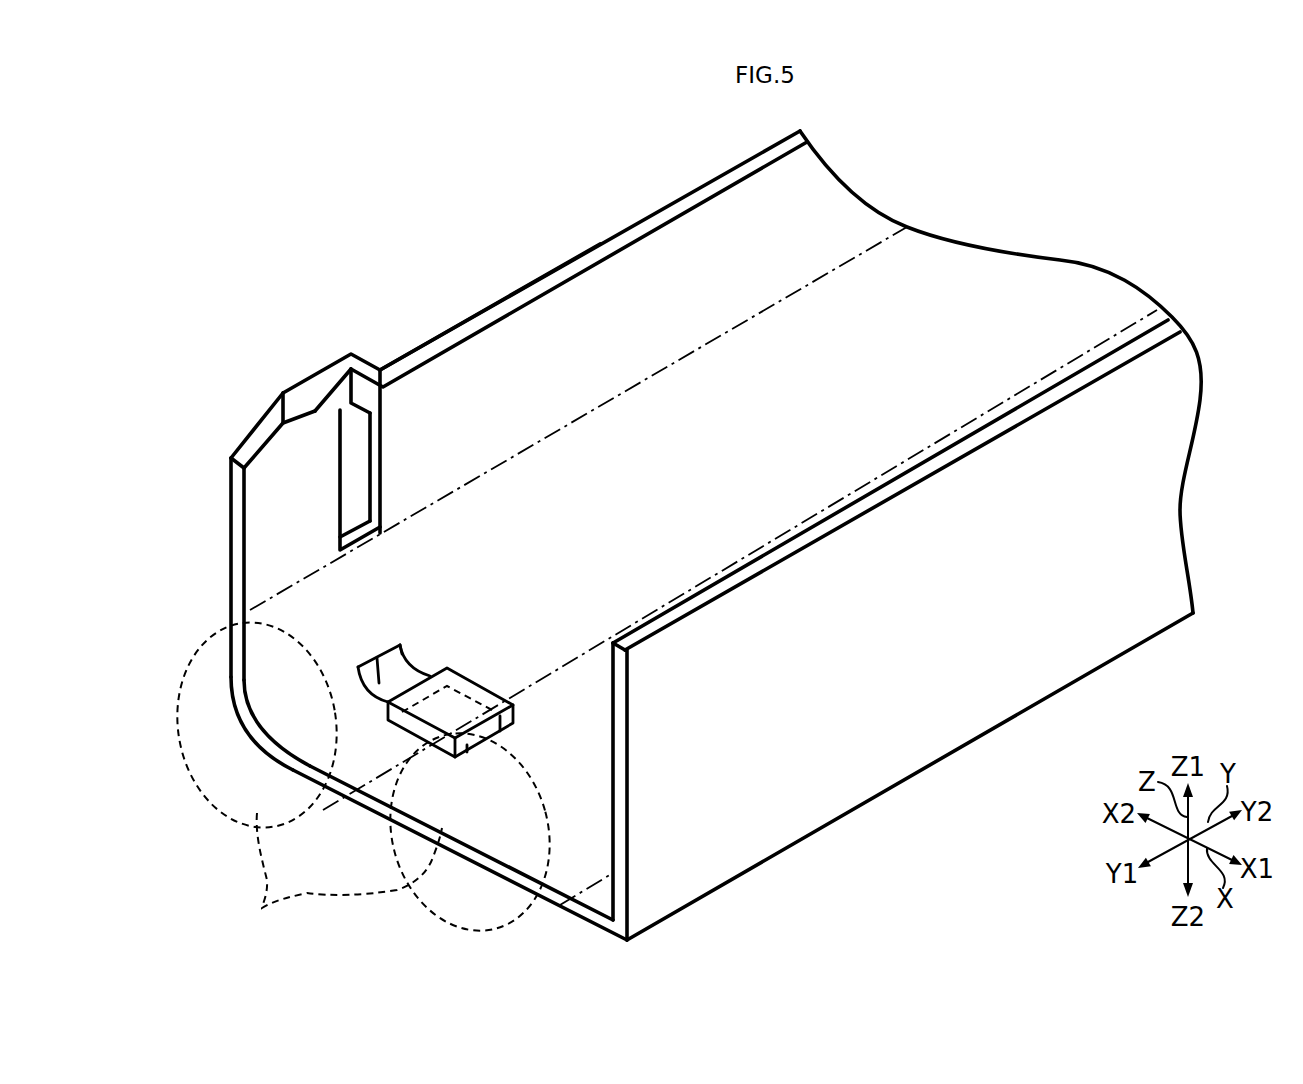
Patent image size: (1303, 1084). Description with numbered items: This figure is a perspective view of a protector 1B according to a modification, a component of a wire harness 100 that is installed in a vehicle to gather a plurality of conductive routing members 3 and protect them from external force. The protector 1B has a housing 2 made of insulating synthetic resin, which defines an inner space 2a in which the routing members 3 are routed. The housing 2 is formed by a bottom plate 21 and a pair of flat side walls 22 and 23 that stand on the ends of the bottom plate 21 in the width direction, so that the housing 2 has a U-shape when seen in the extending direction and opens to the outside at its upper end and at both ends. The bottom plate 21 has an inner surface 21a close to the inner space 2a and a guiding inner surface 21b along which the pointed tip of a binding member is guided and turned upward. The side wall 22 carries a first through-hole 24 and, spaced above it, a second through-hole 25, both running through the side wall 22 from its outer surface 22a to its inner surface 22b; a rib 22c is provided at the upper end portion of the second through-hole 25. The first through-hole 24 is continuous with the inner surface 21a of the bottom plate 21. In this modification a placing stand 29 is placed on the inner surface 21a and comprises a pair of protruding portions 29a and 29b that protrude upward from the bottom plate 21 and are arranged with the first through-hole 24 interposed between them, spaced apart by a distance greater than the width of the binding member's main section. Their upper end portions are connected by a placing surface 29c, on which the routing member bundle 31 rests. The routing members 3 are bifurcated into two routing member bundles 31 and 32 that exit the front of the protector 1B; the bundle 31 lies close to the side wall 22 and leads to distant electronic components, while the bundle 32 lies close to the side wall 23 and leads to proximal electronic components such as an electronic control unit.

The wire harness 100 is at (433, 233).
The protector 1B is at (403, 287).
The housing 2 is at (618, 233).
The inner space 2a is at (718, 208).
The bottom plate 21 is at (571, 908).
The inner surface 21a is at (380, 800).
The guiding inner surface 21b is at (446, 710).
The side wall 22 is at (243, 477).
The outer surface 22a is at (267, 433).
The inner surface 22b is at (537, 318).
The rib 22c is at (322, 377).
The side wall 23 is at (613, 852).
The first through-hole 24 is at (243, 720).
The second through-hole 25 is at (358, 427).
The placing stand 29 is at (487, 688).
The protruding portion 29a is at (460, 750).
The protruding portion 29b is at (508, 716).
The placing surface 29c is at (427, 713).
The routing members 3 is at (262, 908).
The routing member bundle 31 is at (240, 812).
The routing member bundle 32 is at (452, 908).